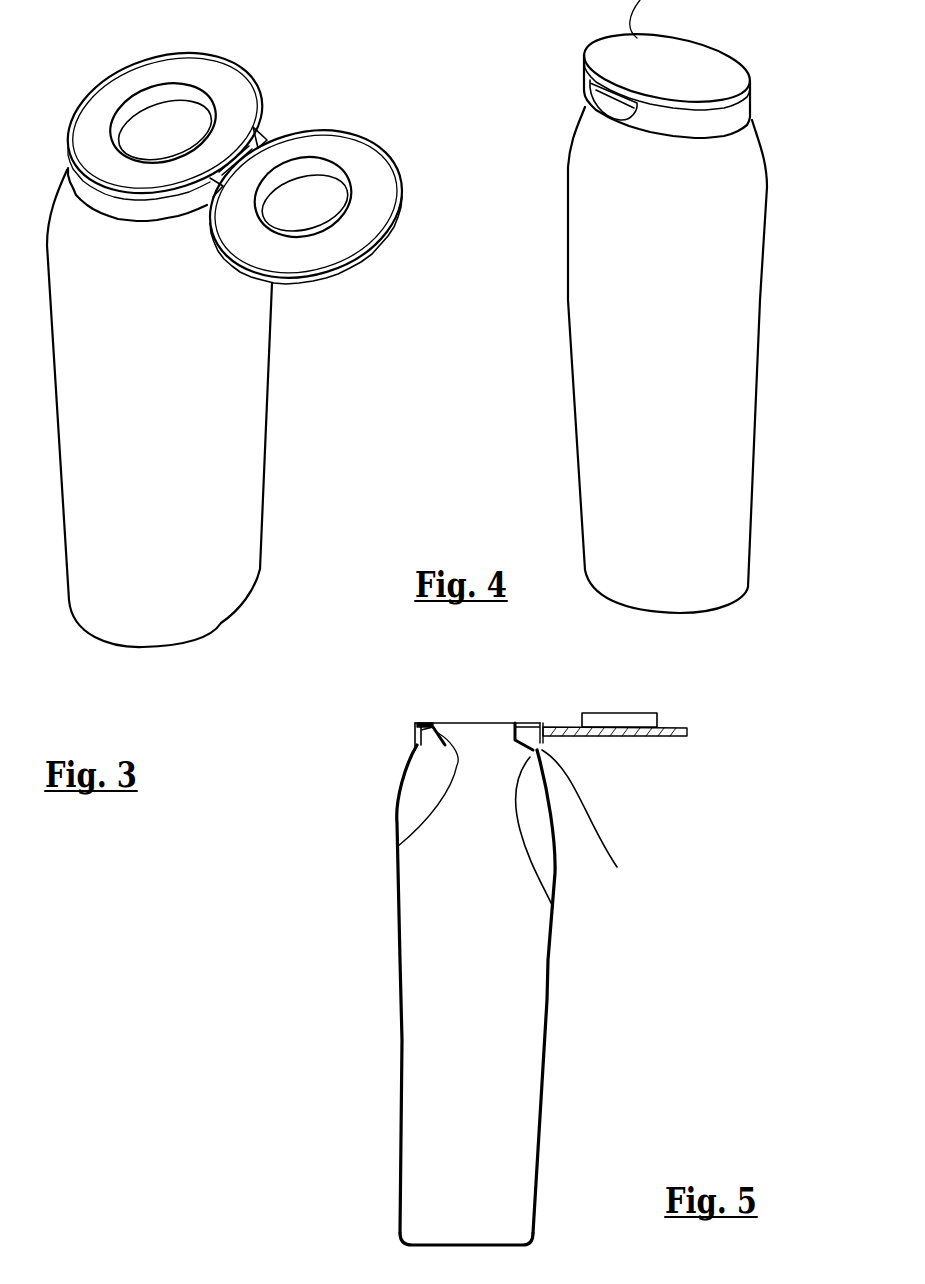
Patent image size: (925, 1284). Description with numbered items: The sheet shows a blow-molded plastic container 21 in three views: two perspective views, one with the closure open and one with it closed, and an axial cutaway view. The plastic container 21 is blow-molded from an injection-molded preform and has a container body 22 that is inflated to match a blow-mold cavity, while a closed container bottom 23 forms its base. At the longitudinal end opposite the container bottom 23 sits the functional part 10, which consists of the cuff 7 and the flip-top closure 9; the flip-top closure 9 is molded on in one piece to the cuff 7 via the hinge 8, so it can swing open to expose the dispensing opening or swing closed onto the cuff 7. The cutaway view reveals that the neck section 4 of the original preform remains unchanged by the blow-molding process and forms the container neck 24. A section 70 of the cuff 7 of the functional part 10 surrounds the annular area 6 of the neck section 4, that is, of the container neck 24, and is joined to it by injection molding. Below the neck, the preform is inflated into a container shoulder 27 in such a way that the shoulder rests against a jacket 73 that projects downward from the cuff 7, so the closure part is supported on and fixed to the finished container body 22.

In FIG. 5, the neck section 4 is at (451, 983).
In FIG. 5, the annular area 6 is at (438, 730).
In FIG. 3, the cuff 7 is at (222, 57).
In FIG. 5, the cuff 7 is at (425, 723).
In FIG. 3, the hinge 8 is at (253, 143).
In FIG. 5, the hinge 8 is at (545, 723).
In FIG. 3, the flip-top closure 9 is at (390, 147).
In FIG. 5, the flip-top closure 9 is at (687, 733).
In FIG. 3, the functional part 10 is at (253, 150).
In FIG. 4, the functional part 10 is at (760, 67).
In FIG. 5, the functional part 10 is at (531, 817).
In FIG. 3, the plastic container 21 is at (246, 408).
In FIG. 4, the plastic container 21 is at (780, 307).
In FIG. 5, the plastic container 21 is at (438, 996).
In FIG. 3, the container body 22 is at (254, 491).
In FIG. 5, the container body 22 is at (547, 1050).
In FIG. 3, the container bottom 23 is at (221, 623).
In FIG. 5, the container bottom 23 is at (443, 1250).
In FIG. 5, the container neck 24 is at (397, 847).
In FIG. 5, the container shoulder 27 is at (553, 907).
In FIG. 5, the section of the cuff 70 is at (407, 753).
In FIG. 5, the jacket 73 is at (610, 827).